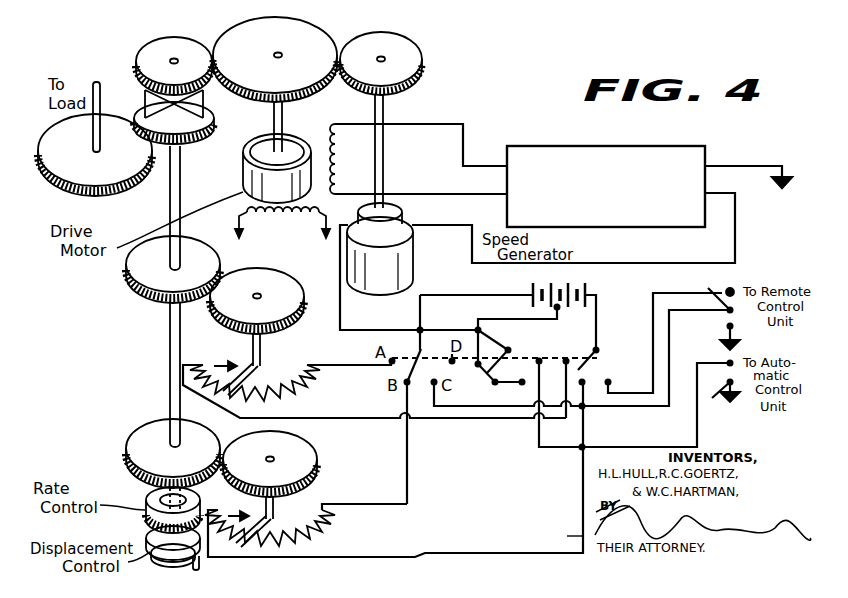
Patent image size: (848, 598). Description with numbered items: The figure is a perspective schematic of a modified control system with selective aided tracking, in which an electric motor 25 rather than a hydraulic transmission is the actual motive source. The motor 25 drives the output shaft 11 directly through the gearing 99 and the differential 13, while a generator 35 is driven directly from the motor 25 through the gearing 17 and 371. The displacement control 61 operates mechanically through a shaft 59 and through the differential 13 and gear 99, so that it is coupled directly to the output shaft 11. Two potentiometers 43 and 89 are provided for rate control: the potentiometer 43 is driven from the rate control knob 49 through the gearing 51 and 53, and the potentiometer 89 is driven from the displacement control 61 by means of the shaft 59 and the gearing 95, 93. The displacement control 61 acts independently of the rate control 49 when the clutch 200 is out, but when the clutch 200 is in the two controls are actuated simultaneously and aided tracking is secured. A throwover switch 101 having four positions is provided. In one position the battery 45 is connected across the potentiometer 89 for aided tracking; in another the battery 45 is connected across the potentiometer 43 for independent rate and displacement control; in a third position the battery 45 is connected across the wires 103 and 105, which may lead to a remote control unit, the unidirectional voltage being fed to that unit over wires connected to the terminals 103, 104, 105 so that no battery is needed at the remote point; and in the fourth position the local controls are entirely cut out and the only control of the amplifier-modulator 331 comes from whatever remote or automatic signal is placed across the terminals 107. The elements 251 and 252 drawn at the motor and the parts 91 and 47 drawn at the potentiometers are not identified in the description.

The output shaft 11 is at (102, 88).
The differential 13 is at (138, 94).
The gearing 17 is at (315, 24).
The gearing 371 is at (410, 37).
The electric motor 25 is at (244, 180).
The motor control winding 252 is at (340, 148).
The motor field winding 251 is at (286, 218).
The amplifier-modulator 331 is at (569, 146).
The generator 35 is at (413, 272).
The gearing 99 is at (108, 198).
The gearing 95 is at (143, 300).
The gearing 93 is at (280, 272).
The shaft 59 is at (170, 340).
The potentiometer wiper arm 91 is at (266, 372).
The potentiometer 89 is at (312, 390).
The battery 45 is at (583, 284).
The throwover switch 101 is at (525, 357).
The wire 105 is at (726, 292).
The wire 103 is at (714, 288).
The terminal 104 is at (728, 327).
The terminals 107 is at (728, 365).
The gearing 51 is at (151, 421).
The rate control knob 49 is at (145, 498).
The displacement control 61 is at (148, 540).
The clutch 200 is at (191, 560).
The gearing 53 is at (316, 449).
The potentiometer wiper arm 47 is at (290, 510).
The potentiometer 43 is at (323, 532).